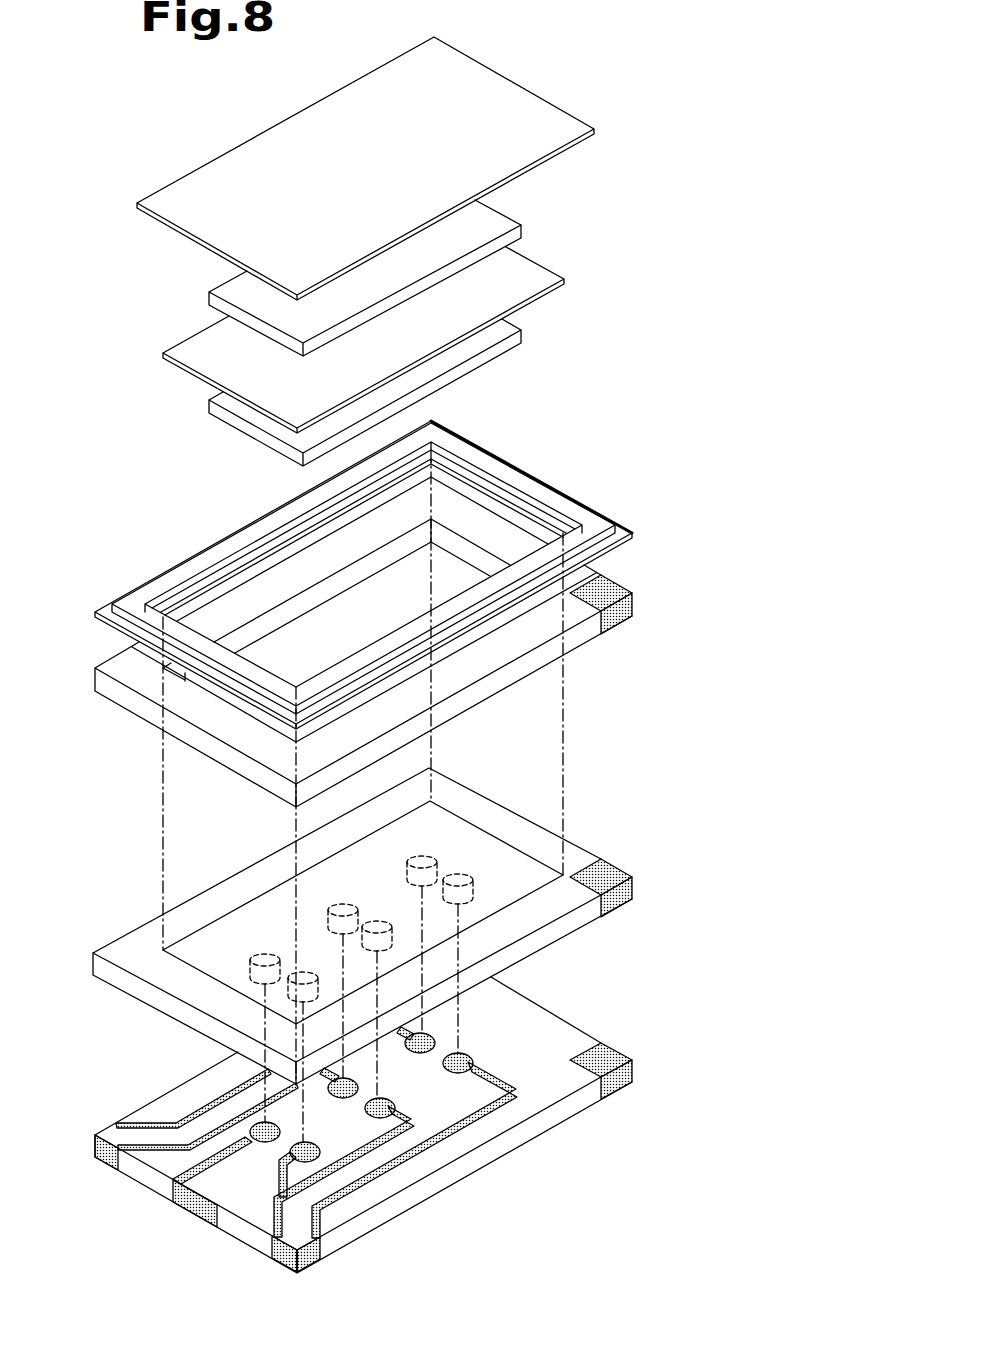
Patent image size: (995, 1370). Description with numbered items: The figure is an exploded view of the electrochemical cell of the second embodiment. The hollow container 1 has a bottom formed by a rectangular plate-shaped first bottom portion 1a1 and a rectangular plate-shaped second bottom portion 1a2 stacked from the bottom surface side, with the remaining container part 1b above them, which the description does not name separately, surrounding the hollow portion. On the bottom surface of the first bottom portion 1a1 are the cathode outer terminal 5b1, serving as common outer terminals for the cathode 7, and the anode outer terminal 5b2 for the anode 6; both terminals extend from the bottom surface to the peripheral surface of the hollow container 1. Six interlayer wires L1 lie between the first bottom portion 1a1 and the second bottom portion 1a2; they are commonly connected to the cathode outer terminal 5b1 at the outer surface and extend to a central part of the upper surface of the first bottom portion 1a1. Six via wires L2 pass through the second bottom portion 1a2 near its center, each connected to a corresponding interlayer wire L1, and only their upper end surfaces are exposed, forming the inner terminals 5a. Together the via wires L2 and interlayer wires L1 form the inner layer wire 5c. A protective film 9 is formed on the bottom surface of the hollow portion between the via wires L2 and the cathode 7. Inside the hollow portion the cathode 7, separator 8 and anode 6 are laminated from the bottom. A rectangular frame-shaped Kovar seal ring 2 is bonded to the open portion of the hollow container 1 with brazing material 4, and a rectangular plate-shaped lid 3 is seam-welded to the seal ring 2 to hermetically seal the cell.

The hollow container 1 is at (57, 768).
The first bottom portion 1a1 is at (105, 1133).
The second bottom portion 1a2 is at (120, 946).
The upper frame part of housing 1b is at (134, 712).
The seal ring 2 is at (147, 588).
The lid 3 is at (137, 204).
The brazing material 4 is at (105, 611).
The inner terminals 5a is at (412, 858).
The cathode outer terminal 5b1 is at (100, 1157).
The anode outer terminal 5b2 is at (620, 624).
The inner layer wire 5c is at (334, 1032).
The anode 6 is at (209, 292).
The cathode 7 is at (209, 401).
The separator 8 is at (163, 354).
The protective film 9 is at (527, 898).
The interlayer wires L1 is at (513, 1092).
The via wires L2 is at (310, 970).